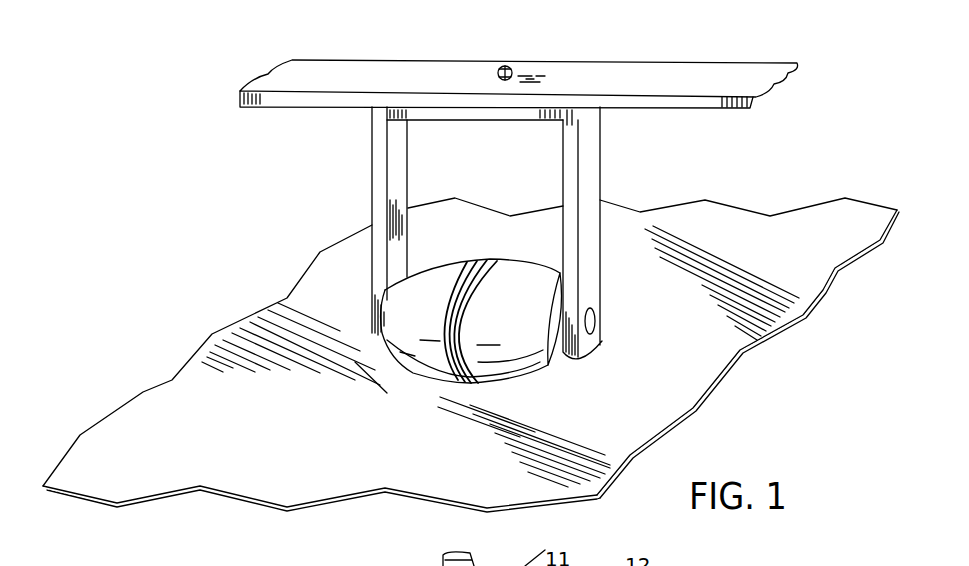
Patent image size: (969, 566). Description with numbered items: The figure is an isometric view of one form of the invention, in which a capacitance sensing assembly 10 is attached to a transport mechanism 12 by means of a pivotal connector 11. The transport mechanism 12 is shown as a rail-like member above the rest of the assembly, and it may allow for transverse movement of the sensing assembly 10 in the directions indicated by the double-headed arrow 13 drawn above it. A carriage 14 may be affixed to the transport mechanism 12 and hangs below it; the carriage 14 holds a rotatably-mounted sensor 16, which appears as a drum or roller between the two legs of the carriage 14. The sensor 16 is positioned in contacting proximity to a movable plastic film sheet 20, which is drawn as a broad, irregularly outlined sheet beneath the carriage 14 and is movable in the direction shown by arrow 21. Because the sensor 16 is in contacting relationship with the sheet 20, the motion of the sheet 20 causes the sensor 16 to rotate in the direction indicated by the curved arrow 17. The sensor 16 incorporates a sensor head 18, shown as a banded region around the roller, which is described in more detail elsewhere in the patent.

The capacitance sensing assembly 10 is at (326, 165).
The pivotal connector 11 is at (514, 66).
The transport mechanism 12 is at (300, 58).
The arrow 13 is at (442, 41).
The carriage 14 is at (600, 139).
The sensor 16 is at (524, 256).
The arrow 17 is at (510, 243).
The sensor head 18 is at (494, 386).
The movable plastic film sheet 20 is at (283, 466).
The arrow 21 is at (706, 155).